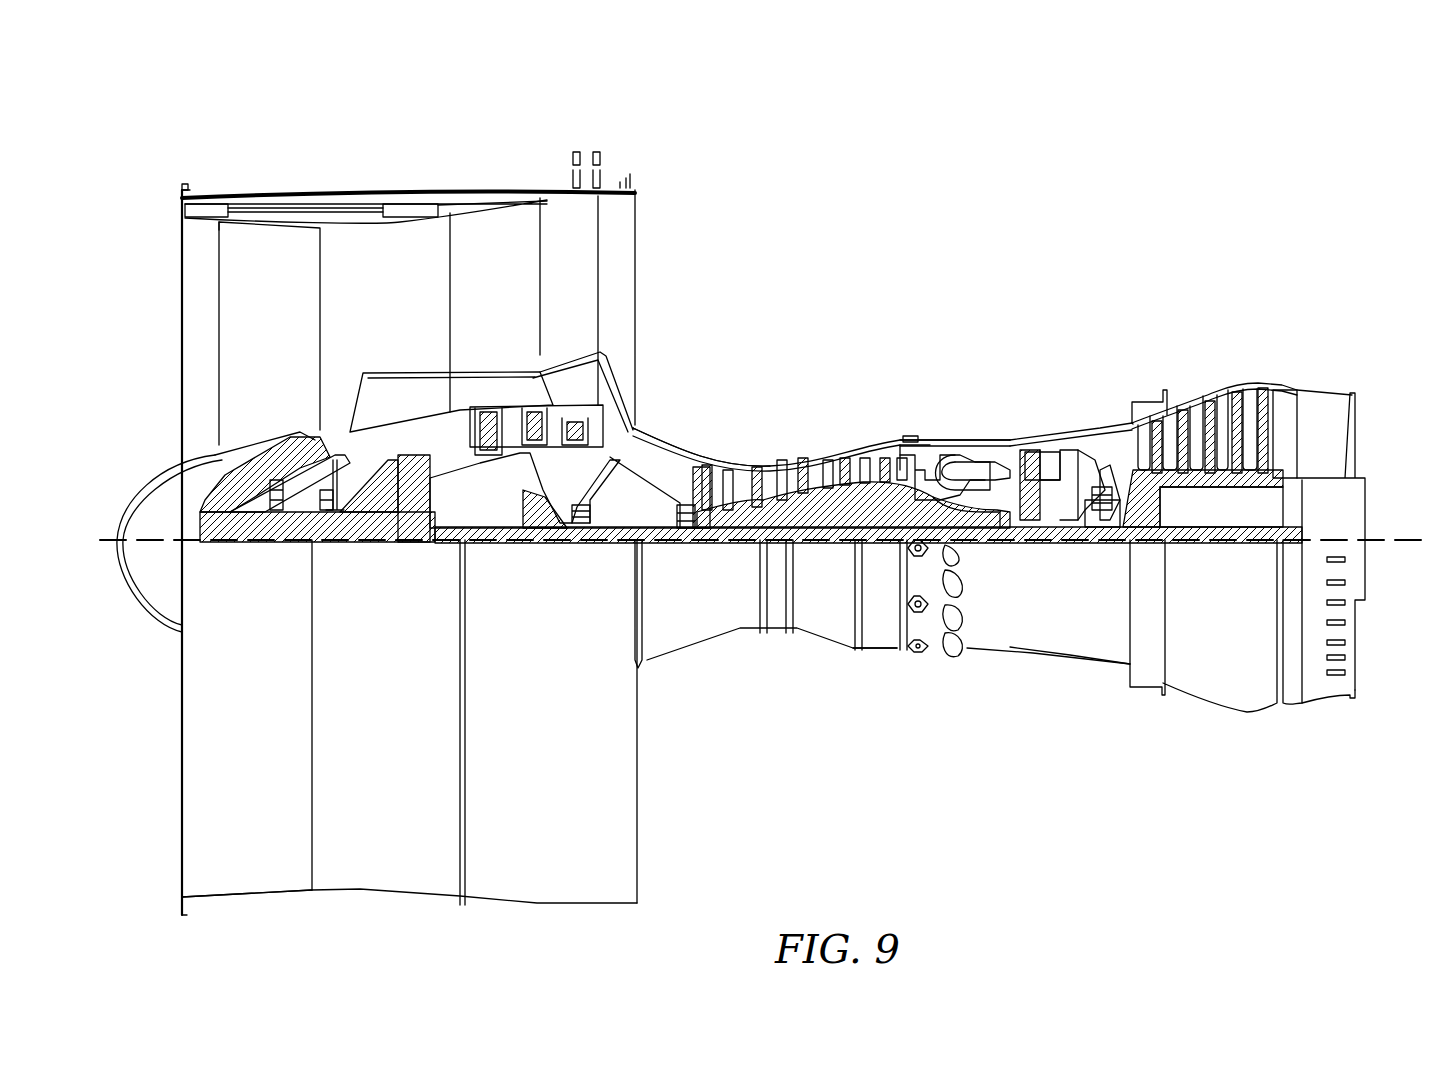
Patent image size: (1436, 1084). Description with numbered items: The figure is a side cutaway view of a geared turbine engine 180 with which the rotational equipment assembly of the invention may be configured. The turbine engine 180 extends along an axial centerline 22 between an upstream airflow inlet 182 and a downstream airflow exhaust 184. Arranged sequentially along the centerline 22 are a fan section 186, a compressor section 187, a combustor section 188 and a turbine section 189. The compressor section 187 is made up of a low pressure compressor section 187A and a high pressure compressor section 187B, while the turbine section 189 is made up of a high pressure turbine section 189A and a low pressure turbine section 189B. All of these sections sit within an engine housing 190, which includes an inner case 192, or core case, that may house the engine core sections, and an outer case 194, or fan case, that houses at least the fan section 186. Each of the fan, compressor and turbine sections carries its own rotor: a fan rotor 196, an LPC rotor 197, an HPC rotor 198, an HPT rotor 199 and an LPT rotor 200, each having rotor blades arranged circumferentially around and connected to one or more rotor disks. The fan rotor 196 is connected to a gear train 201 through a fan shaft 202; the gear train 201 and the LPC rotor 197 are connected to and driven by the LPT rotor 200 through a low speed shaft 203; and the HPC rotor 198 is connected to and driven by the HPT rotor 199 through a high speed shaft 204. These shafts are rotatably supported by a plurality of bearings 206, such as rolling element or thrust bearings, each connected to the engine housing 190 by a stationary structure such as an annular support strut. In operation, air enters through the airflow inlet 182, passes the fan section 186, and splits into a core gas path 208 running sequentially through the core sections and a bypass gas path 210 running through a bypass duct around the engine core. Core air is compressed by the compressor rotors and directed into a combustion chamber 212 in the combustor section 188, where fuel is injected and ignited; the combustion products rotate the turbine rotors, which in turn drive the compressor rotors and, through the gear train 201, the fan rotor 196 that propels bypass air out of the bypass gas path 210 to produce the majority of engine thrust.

The geared turbine engine 180 is at (148, 176).
The airflow inlet 182 is at (182, 270).
The airflow exhaust 184 is at (1355, 430).
The fan section 186 is at (370, 165).
The compressor section 187 is at (880, 100).
The low pressure compressor section 187A is at (637, 150).
The high pressure compressor section 187B is at (880, 360).
The combustor section 188 is at (1020, 360).
The turbine section 189 is at (1310, 285).
The high pressure turbine section 189A is at (1108, 360).
The low pressure turbine section 189B is at (1310, 360).
The engine housing 190 is at (668, 680).
The inner case 192 is at (878, 650).
The outer case 194 is at (583, 903).
The fan rotor 196 is at (192, 452).
The LPC rotor 197 is at (530, 480).
The HPC rotor 198 is at (822, 500).
The HPT rotor 199 is at (1050, 545).
The LPT rotor 200 is at (1217, 478).
The gear train 201 is at (410, 545).
The fan shaft 202 is at (257, 547).
The low speed shaft 203 is at (1223, 547).
The high speed shaft 204 is at (996, 548).
The bearings 206 is at (310, 545).
The core gas path 208 is at (662, 460).
The bypass gas path 210 is at (462, 305).
The combustion chamber 212 is at (968, 470).
The centerline 22 is at (1418, 560).